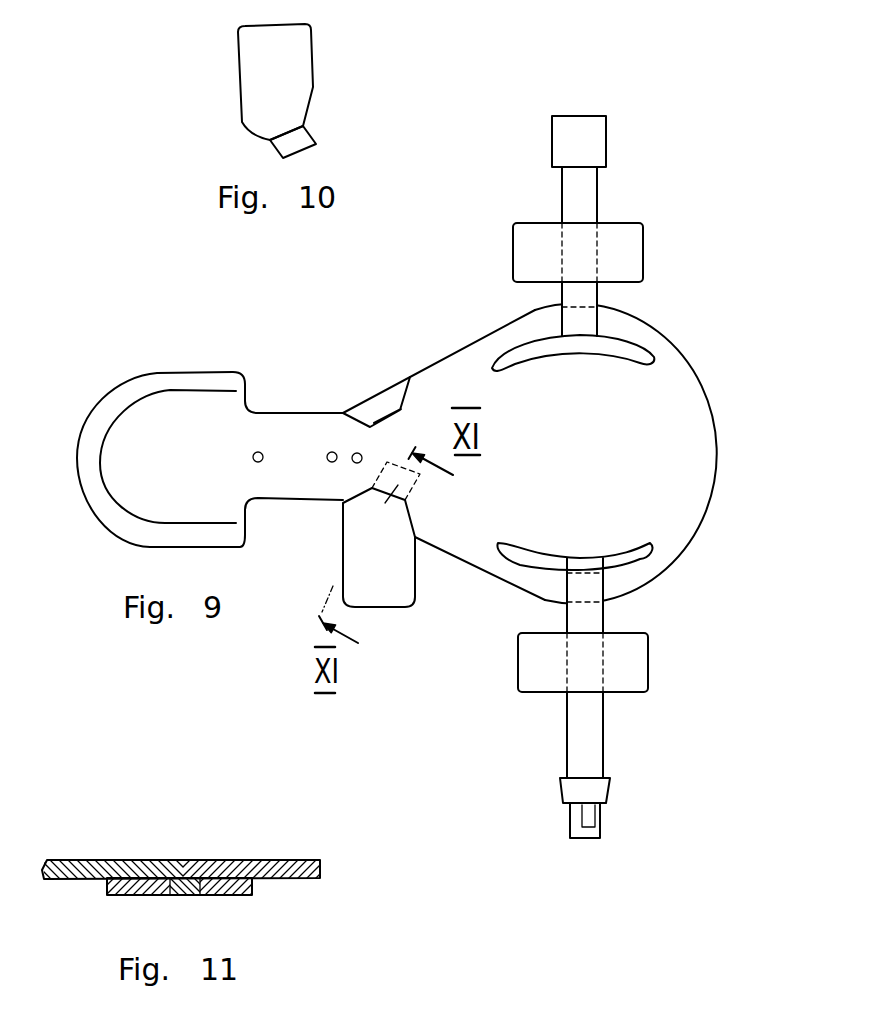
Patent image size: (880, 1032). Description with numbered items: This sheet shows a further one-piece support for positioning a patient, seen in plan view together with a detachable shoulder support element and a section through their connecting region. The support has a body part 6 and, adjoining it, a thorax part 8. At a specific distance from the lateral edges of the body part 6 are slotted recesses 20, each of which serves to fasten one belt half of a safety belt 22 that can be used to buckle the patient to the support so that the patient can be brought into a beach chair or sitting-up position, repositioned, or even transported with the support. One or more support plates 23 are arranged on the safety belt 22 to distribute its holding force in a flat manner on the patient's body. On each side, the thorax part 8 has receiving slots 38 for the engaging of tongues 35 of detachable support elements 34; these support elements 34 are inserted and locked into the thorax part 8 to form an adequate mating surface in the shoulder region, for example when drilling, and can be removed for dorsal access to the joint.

In FIG. 9, the body part 6 is at (688, 394).
In FIG. 9, the thorax part 8 is at (435, 385).
In FIG. 11, the thorax part 8 is at (240, 860).
In FIG. 9, the slotted recesses 20 is at (637, 347).
In FIG. 9, the safety belt 22 is at (615, 174).
In FIG. 9, the support plates 23 is at (627, 248).
In FIG. 10, the support elements 34 is at (292, 68).
In FIG. 9, the support elements 34 is at (400, 588).
In FIG. 11, the support elements 34 is at (102, 860).
In FIG. 10, the tongues 35 is at (300, 142).
In FIG. 11, the tongues 35 is at (232, 890).
In FIG. 9, the receiving slots 38 is at (385, 413).